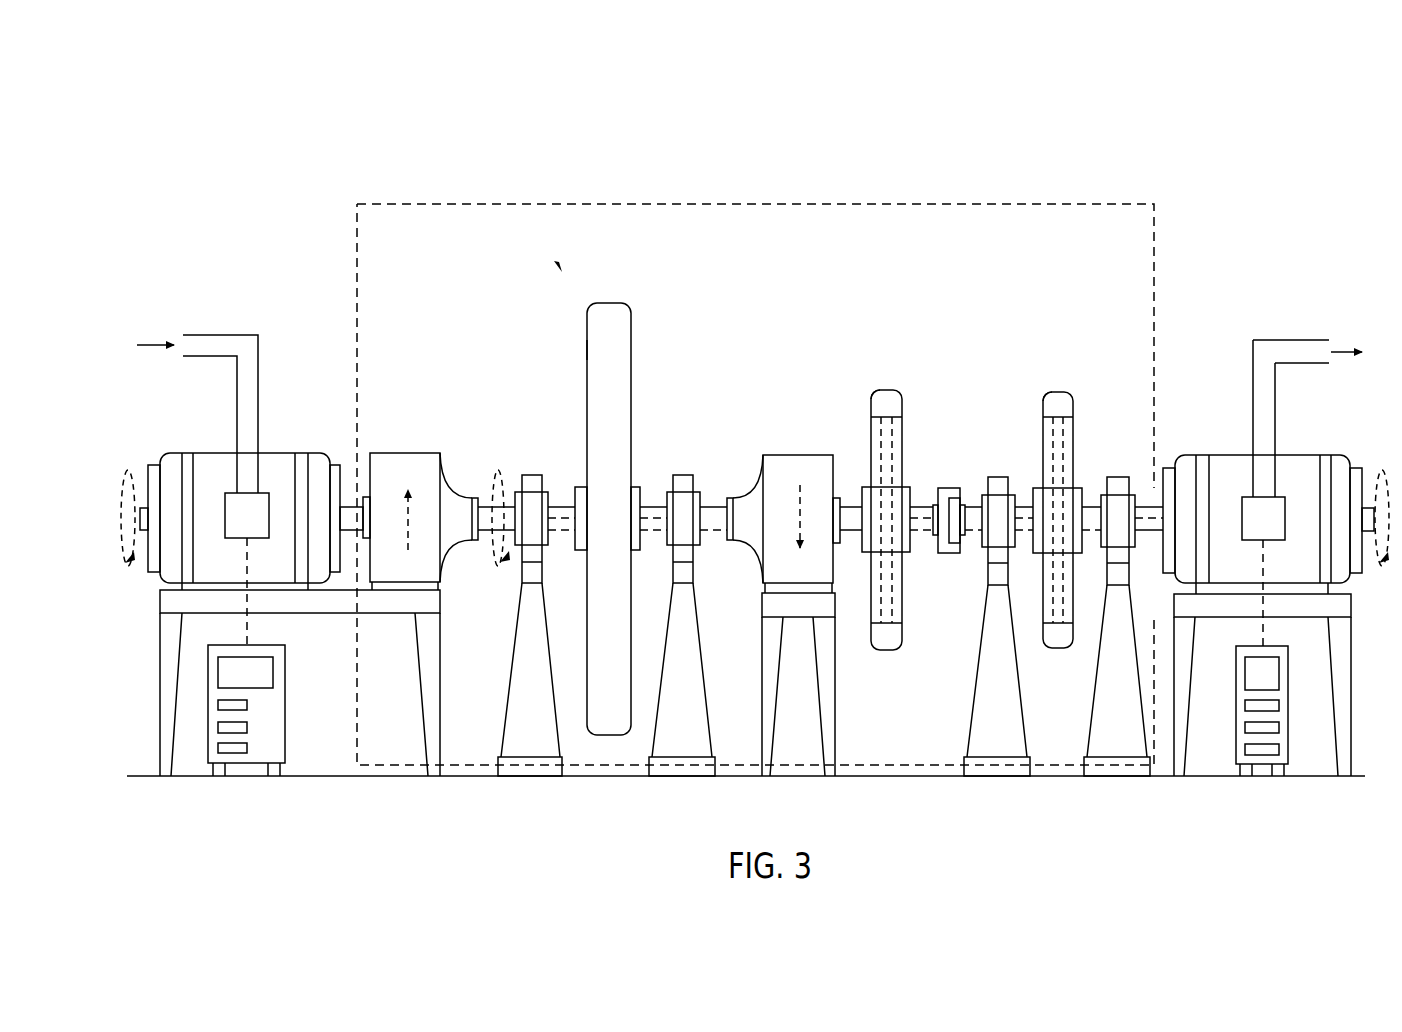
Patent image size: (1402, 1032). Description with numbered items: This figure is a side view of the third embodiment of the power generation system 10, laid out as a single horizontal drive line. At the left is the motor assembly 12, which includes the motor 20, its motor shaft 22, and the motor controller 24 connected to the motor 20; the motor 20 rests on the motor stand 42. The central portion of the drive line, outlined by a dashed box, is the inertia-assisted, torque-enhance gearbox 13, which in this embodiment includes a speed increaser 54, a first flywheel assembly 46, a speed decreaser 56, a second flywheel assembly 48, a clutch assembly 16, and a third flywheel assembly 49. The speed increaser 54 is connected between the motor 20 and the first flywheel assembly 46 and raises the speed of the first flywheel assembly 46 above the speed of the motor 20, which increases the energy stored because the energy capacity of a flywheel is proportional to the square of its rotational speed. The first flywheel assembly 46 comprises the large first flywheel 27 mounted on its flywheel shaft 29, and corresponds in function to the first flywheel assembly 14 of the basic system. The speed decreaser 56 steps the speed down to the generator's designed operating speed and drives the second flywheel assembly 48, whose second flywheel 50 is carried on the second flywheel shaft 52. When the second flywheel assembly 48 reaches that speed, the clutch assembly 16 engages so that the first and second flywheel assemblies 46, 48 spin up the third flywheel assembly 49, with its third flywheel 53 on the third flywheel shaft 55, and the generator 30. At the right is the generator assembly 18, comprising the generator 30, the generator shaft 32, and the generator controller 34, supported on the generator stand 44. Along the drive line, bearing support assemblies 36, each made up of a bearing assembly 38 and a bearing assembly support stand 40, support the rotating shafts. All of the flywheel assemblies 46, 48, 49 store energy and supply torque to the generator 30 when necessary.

The power generation system 10 is at (236, 238).
The motor assembly 12 is at (296, 400).
The inertia-assisted, torque-enhance gearbox 13 is at (743, 200).
The first flywheel assembly 14 is at (553, 313).
The clutch assembly 16 is at (940, 484).
The generator assembly 18 is at (1206, 417).
The motor 20 is at (213, 460).
The motor shaft 22 is at (354, 512).
The motor controller 24 is at (276, 742).
The first flywheel 27 is at (587, 350).
The flywheel shaft 29 is at (565, 518).
The generator 30 is at (1298, 463).
The generator shaft 32 is at (1143, 533).
The generator controller 34 is at (1290, 727).
The bearing support assembly 36 is at (534, 468).
The bearing assembly 38 is at (516, 492).
The bearing assembly support stand 40 is at (505, 734).
The motor stand 42 is at (436, 668).
The generator stand 44 is at (1340, 675).
The first flywheel assembly 46 is at (610, 300).
The second flywheel assembly 48 is at (884, 388).
The third flywheel assembly 49 is at (1057, 390).
The second flywheel 50 is at (886, 397).
The second flywheel shaft 52 is at (922, 525).
The third flywheel 53 is at (1055, 397).
The speed increaser 54 is at (410, 449).
The third flywheel shaft 55 is at (1027, 525).
The speed decreaser 56 is at (798, 452).